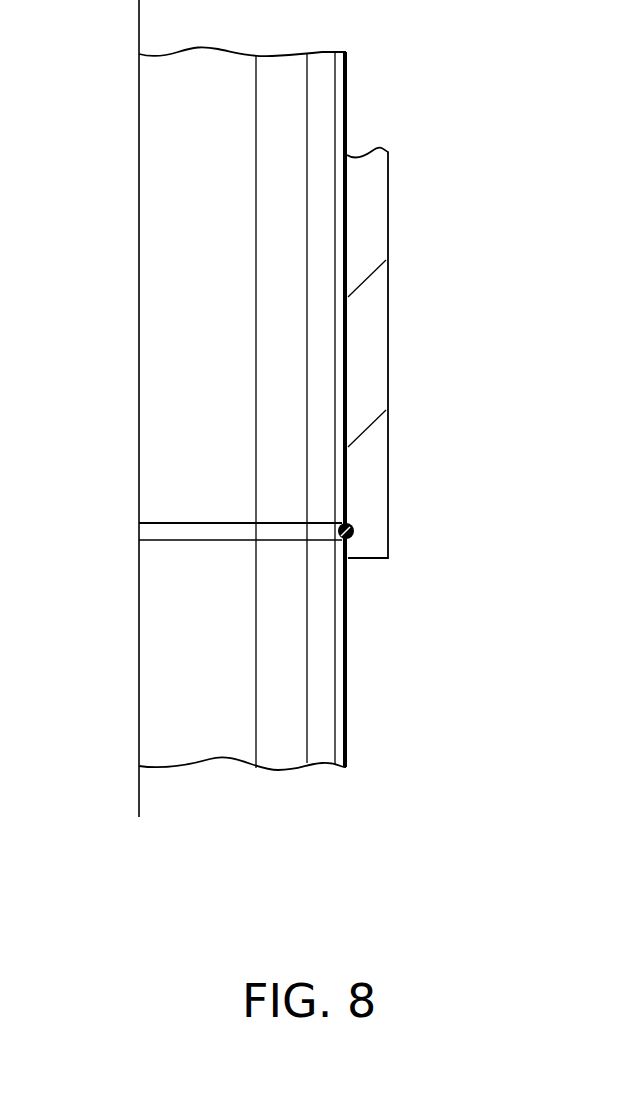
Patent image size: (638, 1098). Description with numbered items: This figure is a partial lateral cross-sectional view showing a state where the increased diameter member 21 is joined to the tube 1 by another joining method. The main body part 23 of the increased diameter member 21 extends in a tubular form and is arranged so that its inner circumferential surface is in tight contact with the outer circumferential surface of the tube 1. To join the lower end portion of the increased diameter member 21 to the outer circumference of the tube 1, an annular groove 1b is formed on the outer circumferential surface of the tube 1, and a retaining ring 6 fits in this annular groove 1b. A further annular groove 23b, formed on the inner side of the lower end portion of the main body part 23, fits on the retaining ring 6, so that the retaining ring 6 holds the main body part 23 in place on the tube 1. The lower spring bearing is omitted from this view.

The tube 1 is at (348, 740).
The annular groove 1b is at (170, 532).
The increased diameter member 21 is at (439, 353).
The main body part 23 is at (372, 378).
The annular groove 23b is at (347, 523).
The retaining ring 6 is at (320, 538).